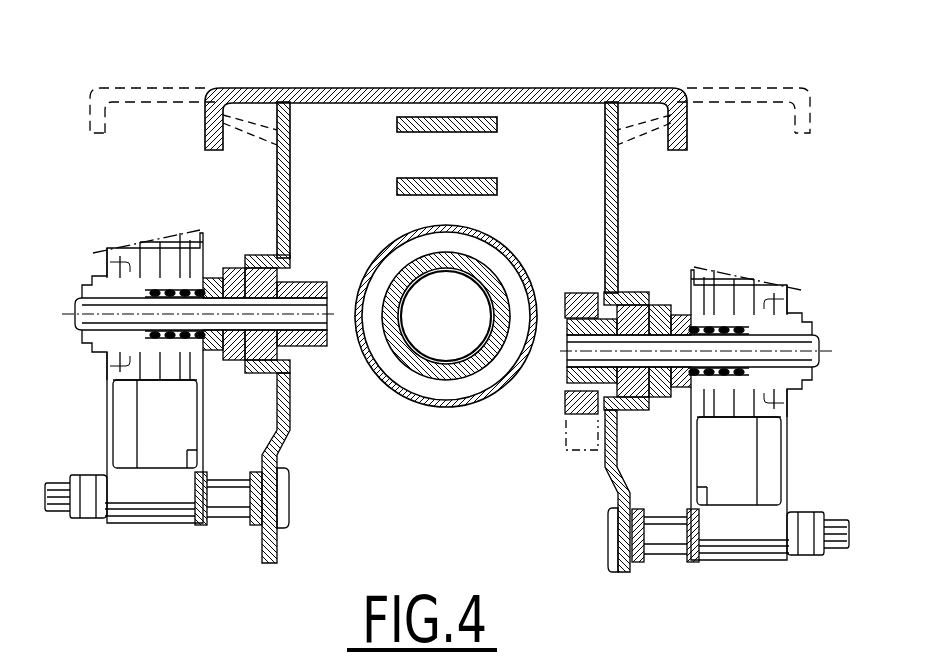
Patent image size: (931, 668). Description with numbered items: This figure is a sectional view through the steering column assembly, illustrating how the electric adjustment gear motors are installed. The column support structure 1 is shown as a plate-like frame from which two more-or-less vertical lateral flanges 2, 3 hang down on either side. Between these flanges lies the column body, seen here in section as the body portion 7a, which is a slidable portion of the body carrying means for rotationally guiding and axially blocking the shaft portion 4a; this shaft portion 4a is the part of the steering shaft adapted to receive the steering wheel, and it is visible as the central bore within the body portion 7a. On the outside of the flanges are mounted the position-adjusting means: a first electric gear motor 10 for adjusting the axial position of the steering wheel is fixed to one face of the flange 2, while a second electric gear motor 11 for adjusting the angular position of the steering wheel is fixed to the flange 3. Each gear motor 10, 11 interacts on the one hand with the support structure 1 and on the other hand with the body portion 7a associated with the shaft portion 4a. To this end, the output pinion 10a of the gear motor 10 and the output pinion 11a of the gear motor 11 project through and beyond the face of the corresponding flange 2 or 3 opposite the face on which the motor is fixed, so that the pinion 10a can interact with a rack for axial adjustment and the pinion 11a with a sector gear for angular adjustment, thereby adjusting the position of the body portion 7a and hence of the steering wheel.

The column support structure 1 is at (604, 25).
The lateral flange 2 is at (623, 226).
The lateral flange 3 is at (270, 190).
The shaft portion 4a is at (484, 286).
The body portion 7a is at (436, 411).
The first electric gear motor 10 is at (694, 379).
The output pinion 10a is at (552, 407).
The second electric gear motor 11 is at (100, 432).
The output pinion 11a is at (329, 360).